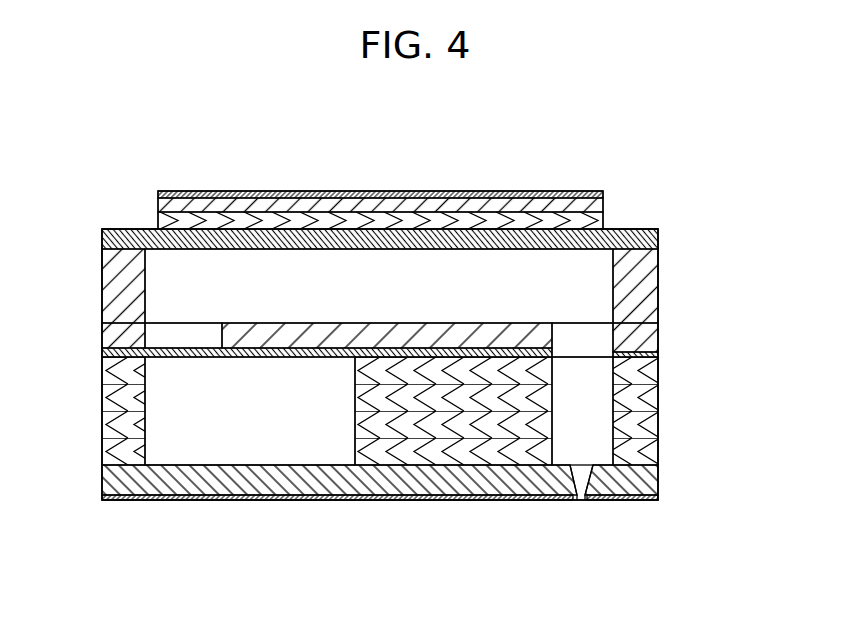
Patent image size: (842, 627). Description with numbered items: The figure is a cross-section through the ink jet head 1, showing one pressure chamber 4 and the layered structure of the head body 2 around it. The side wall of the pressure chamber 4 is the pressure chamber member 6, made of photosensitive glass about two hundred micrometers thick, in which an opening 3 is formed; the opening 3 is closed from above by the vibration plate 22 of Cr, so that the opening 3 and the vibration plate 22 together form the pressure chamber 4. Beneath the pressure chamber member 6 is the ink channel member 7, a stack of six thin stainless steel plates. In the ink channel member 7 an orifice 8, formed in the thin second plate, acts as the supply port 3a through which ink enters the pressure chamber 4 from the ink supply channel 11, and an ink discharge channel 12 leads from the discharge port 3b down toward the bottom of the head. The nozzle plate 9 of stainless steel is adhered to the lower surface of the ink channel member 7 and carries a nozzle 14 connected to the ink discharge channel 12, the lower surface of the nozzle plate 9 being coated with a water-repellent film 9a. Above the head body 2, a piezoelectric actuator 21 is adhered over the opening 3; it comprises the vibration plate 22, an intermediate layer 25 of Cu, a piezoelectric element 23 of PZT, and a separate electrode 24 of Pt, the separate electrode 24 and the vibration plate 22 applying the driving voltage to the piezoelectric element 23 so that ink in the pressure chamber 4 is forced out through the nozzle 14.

The ink jet head 1 is at (91, 101).
The head body 2 is at (86, 350).
The opening 3 is at (147, 270).
The supply port 3a is at (185, 330).
The discharge port 3b is at (579, 334).
The pressure chamber 4 is at (388, 299).
The pressure chamber member 6 is at (660, 278).
The ink channel member 7 is at (662, 323).
The orifice 8 is at (182, 357).
The nozzle plate 9 is at (660, 483).
The water-repellent film 9a is at (660, 497).
The ink supply channel 11 is at (276, 423).
The ink discharge channel 12 is at (570, 425).
The nozzle 14 is at (580, 508).
The piezoelectric actuator 21 is at (448, 160).
The vibration plate 22 is at (660, 238).
The piezoelectric element 23 is at (605, 207).
The separate electrode 24 is at (605, 197).
The intermediate layer 25 is at (605, 222).